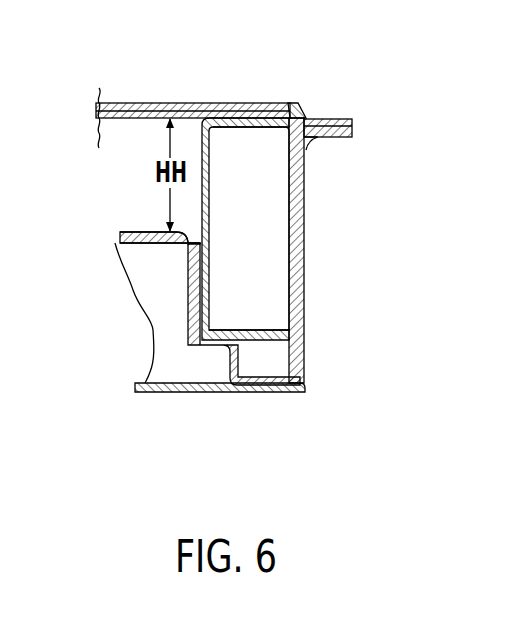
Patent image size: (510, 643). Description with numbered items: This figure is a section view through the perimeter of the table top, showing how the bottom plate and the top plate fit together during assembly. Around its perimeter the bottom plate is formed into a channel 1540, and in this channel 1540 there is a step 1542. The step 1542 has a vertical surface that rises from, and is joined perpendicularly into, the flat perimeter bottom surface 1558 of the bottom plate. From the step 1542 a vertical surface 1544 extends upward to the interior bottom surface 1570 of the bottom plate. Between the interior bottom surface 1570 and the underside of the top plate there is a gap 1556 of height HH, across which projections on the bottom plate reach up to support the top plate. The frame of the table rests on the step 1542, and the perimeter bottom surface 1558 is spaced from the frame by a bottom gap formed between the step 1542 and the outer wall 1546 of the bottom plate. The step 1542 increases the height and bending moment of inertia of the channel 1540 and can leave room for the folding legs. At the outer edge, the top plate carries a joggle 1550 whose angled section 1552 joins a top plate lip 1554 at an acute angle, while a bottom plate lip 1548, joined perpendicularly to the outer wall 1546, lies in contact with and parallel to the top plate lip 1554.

The channel 1540 is at (190, 356).
The step 1542 is at (266, 362).
The vertical surface 1544 is at (193, 280).
The outer wall 1546 is at (304, 322).
The bottom plate lip 1548 is at (325, 140).
The joggle 1550 is at (295, 98).
The angled section 1552 is at (300, 113).
The top plate lip 1554 is at (335, 120).
The gap 1556 is at (147, 181).
The perimeter bottom surface 1558 is at (276, 390).
The interior bottom surface 1570 is at (125, 245).